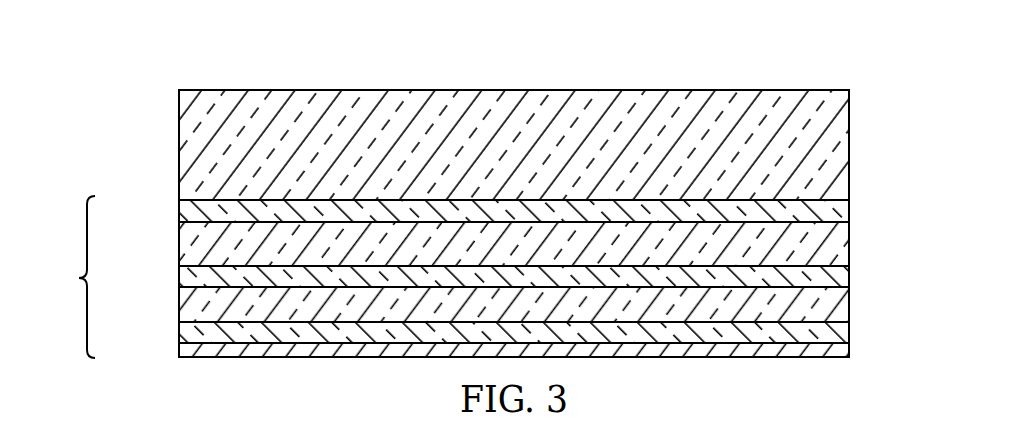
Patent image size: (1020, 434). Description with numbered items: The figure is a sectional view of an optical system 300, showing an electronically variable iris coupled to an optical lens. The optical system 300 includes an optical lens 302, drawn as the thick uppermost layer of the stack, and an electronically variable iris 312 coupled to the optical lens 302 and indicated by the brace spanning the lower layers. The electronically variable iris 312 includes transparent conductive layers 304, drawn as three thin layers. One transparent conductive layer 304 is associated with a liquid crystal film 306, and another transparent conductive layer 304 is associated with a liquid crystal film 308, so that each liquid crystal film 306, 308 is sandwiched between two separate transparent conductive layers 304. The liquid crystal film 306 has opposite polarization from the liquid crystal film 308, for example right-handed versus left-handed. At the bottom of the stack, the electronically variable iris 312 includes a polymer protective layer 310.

The optical system 300 is at (249, 52).
The optical lens 302 is at (840, 144).
The transparent conductive layers 304 is at (840, 210).
The liquid crystal film 306 is at (184, 243).
The liquid crystal film 308 is at (186, 306).
The polymer protective layer 310 is at (186, 351).
The electronically variable iris 312 is at (64, 277).